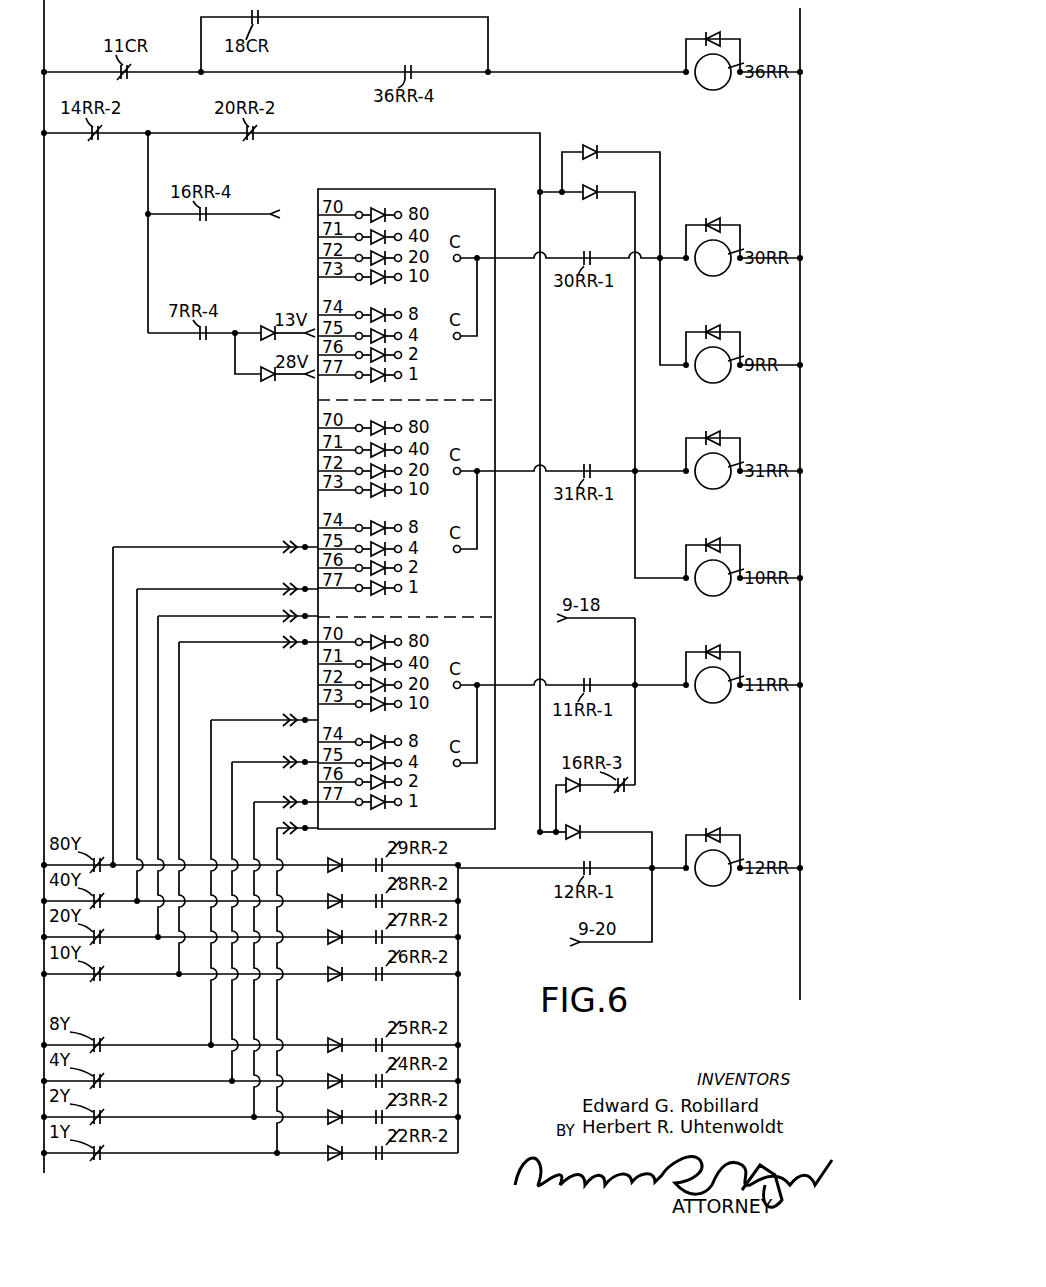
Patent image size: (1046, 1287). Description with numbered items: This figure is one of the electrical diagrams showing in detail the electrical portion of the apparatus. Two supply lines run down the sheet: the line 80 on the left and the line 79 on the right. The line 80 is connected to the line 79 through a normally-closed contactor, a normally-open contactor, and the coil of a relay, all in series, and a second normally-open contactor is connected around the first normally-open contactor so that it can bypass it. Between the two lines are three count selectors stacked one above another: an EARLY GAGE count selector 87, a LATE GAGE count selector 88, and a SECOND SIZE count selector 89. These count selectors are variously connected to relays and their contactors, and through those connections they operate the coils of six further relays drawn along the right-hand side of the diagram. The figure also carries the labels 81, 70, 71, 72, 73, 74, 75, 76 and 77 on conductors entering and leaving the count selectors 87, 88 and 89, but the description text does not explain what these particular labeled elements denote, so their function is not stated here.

The line 79 is at (800, 22).
The line 80 is at (44, 26).
The output line from relay contact 16RR-4 81 is at (214, 224).
The EARLY GAGE count selector 87 is at (486, 362).
The LATE GAGE count selector 88 is at (486, 588).
The SECOND SIZE count selector 89 is at (486, 797).
The input line 70 is at (214, 695).
The input line 71 is at (226, 734).
The input line 72 is at (236, 766).
The input line 73 is at (247, 797).
The input line 74 is at (263, 872).
The input line 75 is at (273, 911).
The input line 76 is at (284, 949).
The input line 77 is at (288, 980).